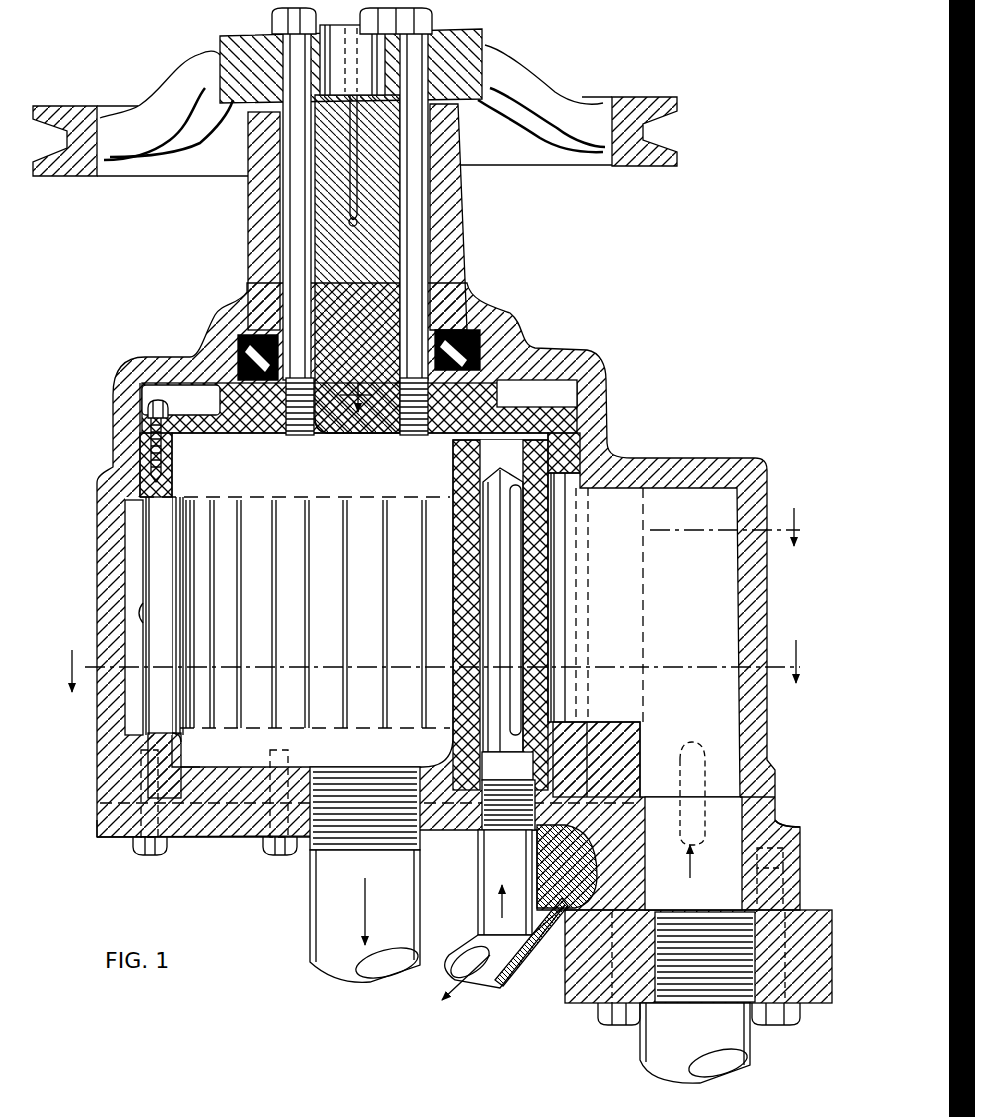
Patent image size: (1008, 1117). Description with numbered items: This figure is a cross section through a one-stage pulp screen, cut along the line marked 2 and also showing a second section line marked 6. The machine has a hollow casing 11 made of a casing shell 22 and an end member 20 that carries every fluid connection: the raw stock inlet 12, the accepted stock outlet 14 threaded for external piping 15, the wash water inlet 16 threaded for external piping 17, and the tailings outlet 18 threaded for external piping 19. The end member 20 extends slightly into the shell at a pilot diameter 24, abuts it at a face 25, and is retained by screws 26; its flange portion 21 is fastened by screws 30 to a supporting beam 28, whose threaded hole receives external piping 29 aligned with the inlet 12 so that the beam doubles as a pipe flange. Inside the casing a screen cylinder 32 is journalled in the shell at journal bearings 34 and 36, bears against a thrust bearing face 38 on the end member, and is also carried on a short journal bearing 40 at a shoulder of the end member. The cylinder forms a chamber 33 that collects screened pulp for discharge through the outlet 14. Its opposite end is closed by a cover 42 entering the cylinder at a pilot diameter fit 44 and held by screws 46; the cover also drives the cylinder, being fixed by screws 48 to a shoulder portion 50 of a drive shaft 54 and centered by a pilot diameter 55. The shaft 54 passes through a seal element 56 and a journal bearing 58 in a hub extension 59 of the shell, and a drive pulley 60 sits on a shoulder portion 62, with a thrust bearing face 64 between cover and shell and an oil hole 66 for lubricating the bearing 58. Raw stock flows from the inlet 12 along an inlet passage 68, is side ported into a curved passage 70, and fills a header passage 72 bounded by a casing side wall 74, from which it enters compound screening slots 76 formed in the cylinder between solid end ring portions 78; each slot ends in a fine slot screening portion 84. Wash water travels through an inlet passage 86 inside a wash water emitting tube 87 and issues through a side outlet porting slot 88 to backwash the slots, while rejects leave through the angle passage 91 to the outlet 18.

The hollow casing 11 is at (602, 350).
The raw stock inlet 12 is at (688, 910).
The accepted stock outlet 14 is at (366, 767).
The external piping 15 is at (310, 923).
The wash water inlet 16 is at (474, 845).
The external piping 17 is at (476, 882).
The tailings outlet 18 is at (560, 935).
The external piping 19 is at (502, 982).
The end member 20 is at (223, 840).
The flange portion 21 is at (800, 873).
The casing shell 22 is at (610, 410).
The pilot diameter 24 is at (137, 800).
The face 25 is at (117, 838).
The screws 26 is at (152, 852).
The supporting beam 28 is at (812, 1002).
The external piping 29 is at (665, 1064).
The screws 30 is at (603, 1022).
The screen cylinder 32 is at (175, 477).
The chamber 33 is at (276, 612).
The journal bearing 34 is at (138, 462).
The journal bearing 36 is at (140, 753).
The thrust bearing face 38 is at (183, 758).
The short journal bearing 40 is at (187, 787).
The cover 42 is at (252, 433).
The pilot diameter fit 44 is at (188, 433).
The screws 46 is at (166, 406).
The screws 48 is at (300, 258).
The shoulder portion 50 is at (315, 385).
The drive shaft 54 is at (387, 237).
The pilot diameter 55 is at (332, 428).
The seal element 56 is at (480, 340).
The journal bearing 58 is at (280, 213).
The hub extension 59 is at (467, 233).
The drive pulley 60 is at (620, 97).
The shoulder portion 62 is at (300, 50).
The thrust bearing face 64 is at (232, 366).
The oil hole 66 is at (357, 163).
The inlet passage 68 is at (730, 830).
The curved passage 70 is at (604, 607).
The header passage 72 is at (135, 582).
The casing side wall 74 is at (132, 613).
The compound screening slots 76 is at (153, 535).
The solid end ring portions 78 is at (298, 477).
The slot screening portion 84 is at (193, 530).
The inlet passage 86 is at (502, 618).
The wash water emitting tube 87 is at (453, 570).
The side outlet porting slot 88 is at (520, 650).
The angle passage 91 is at (653, 800).
The section line 2 is at (575, 464).
The section line 6 is at (433, 666).